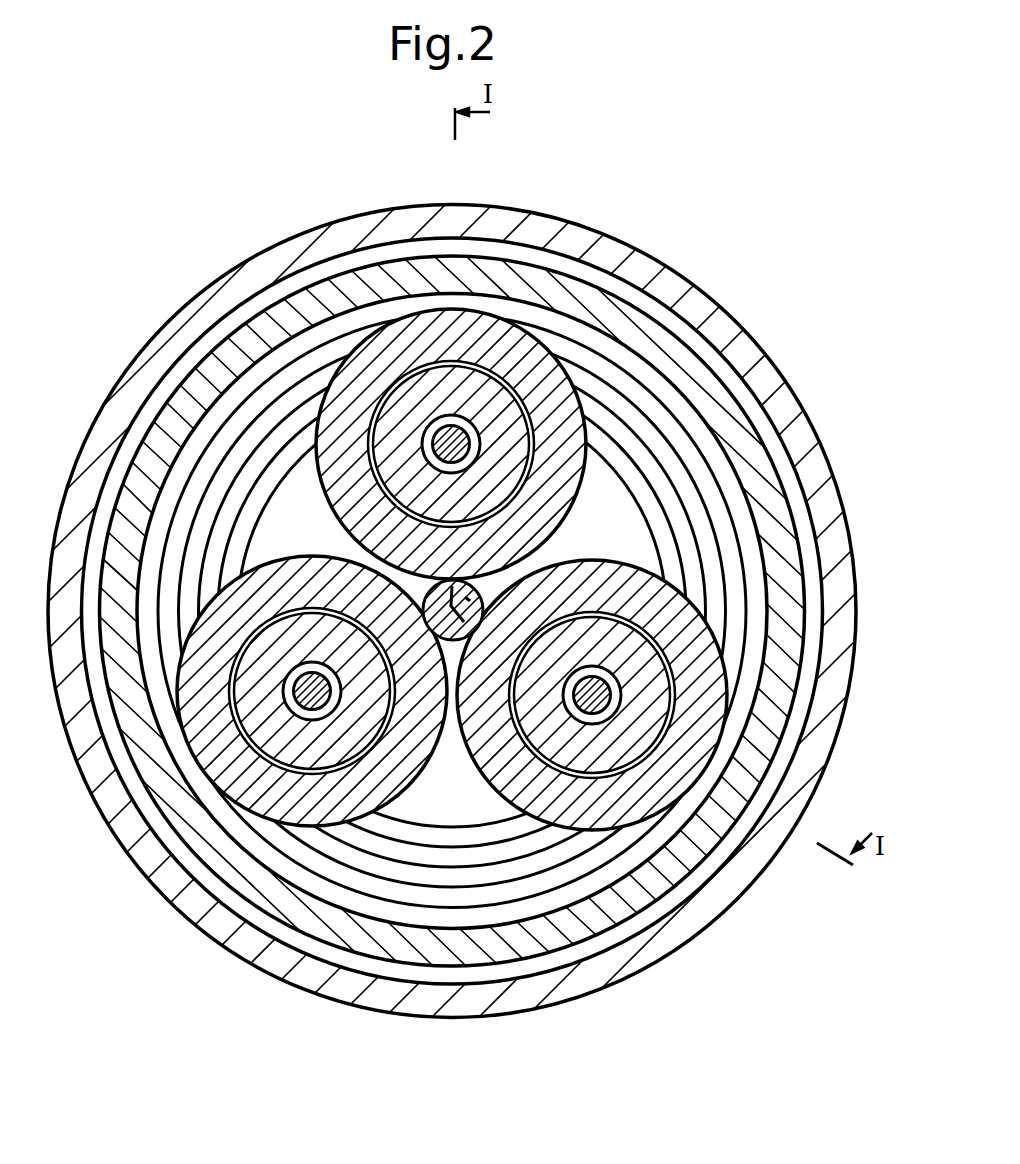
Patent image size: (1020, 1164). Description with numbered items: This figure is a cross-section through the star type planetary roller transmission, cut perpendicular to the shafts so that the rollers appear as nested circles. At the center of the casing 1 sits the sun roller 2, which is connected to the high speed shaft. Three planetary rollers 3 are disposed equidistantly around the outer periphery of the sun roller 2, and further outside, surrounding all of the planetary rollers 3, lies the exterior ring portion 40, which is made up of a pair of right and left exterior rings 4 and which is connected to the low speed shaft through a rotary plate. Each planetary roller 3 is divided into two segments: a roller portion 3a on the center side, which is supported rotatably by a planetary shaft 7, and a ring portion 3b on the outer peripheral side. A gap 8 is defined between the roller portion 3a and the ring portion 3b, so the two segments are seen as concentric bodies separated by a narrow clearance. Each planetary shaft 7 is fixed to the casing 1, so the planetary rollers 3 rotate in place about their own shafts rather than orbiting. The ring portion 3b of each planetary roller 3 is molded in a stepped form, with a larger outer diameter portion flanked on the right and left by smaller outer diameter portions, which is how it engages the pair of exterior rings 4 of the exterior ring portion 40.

The casing 1 is at (207, 940).
The exterior ring portion 40 is at (770, 460).
The exterior ring 4 is at (668, 425).
The planetary roller 3 is at (506, 358).
The roller portion 3a is at (500, 403).
The ring portion 3b is at (473, 340).
The gap 8 is at (422, 366).
The planetary shaft 7 is at (447, 472).
The sun roller 2 is at (478, 581).